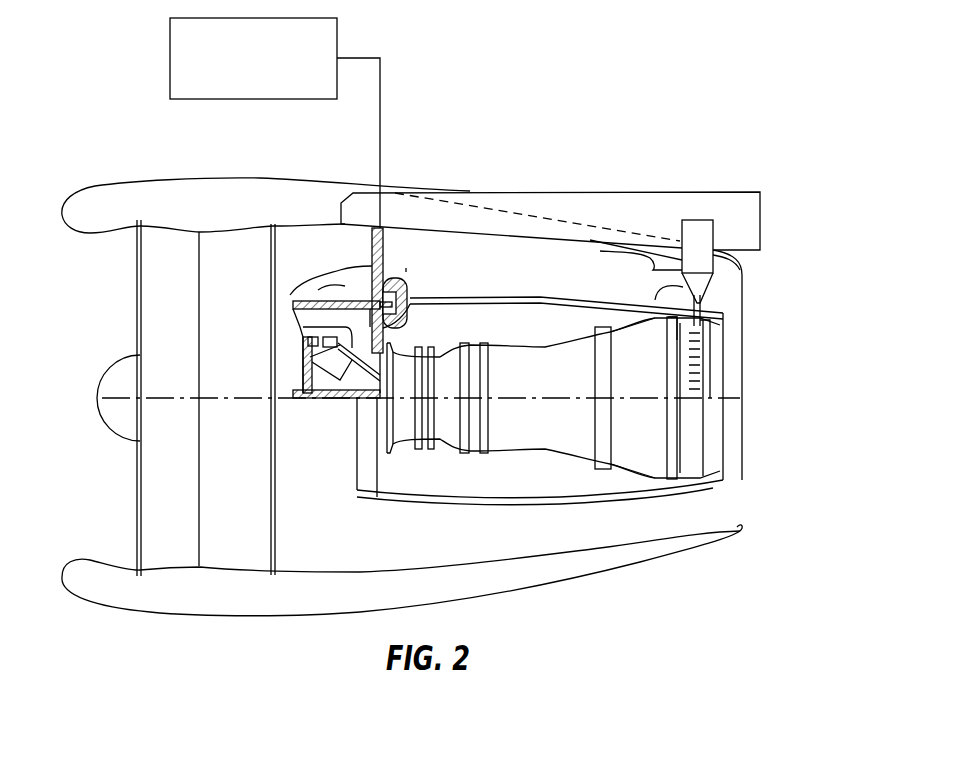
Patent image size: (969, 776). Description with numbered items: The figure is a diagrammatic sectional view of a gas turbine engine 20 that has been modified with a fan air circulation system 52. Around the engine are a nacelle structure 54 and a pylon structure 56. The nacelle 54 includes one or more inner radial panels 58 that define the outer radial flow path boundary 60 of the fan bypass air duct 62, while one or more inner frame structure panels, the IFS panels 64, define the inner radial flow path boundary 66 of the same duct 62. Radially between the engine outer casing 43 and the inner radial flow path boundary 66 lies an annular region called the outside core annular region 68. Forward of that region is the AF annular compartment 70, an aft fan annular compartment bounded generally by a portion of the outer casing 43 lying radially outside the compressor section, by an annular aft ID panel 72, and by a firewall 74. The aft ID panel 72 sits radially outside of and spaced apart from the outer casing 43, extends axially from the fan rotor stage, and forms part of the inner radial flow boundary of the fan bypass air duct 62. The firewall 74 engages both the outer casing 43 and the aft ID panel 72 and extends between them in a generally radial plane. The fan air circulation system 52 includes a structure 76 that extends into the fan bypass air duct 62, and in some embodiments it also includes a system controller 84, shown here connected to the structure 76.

The gas turbine engine 20 is at (650, 122).
The engine outer casing 43 is at (303, 332).
The fan air circulation system 52 is at (406, 268).
The nacelle structure 54 is at (238, 172).
The pylon structure 56 is at (688, 183).
The inner radial panels 58 is at (705, 350).
The outer radial flow path boundary 60 is at (690, 272).
The fan bypass air duct 62 is at (517, 253).
The IFS panels 64 is at (732, 342).
The inner radial flow path boundary 66 is at (683, 287).
The outside core annular region 68 is at (520, 333).
The AF annular compartment 70 is at (318, 290).
The aft ID panel 72 is at (340, 300).
The firewall 74 is at (390, 337).
The structure 76 is at (387, 243).
The system controller 84 is at (264, 87).